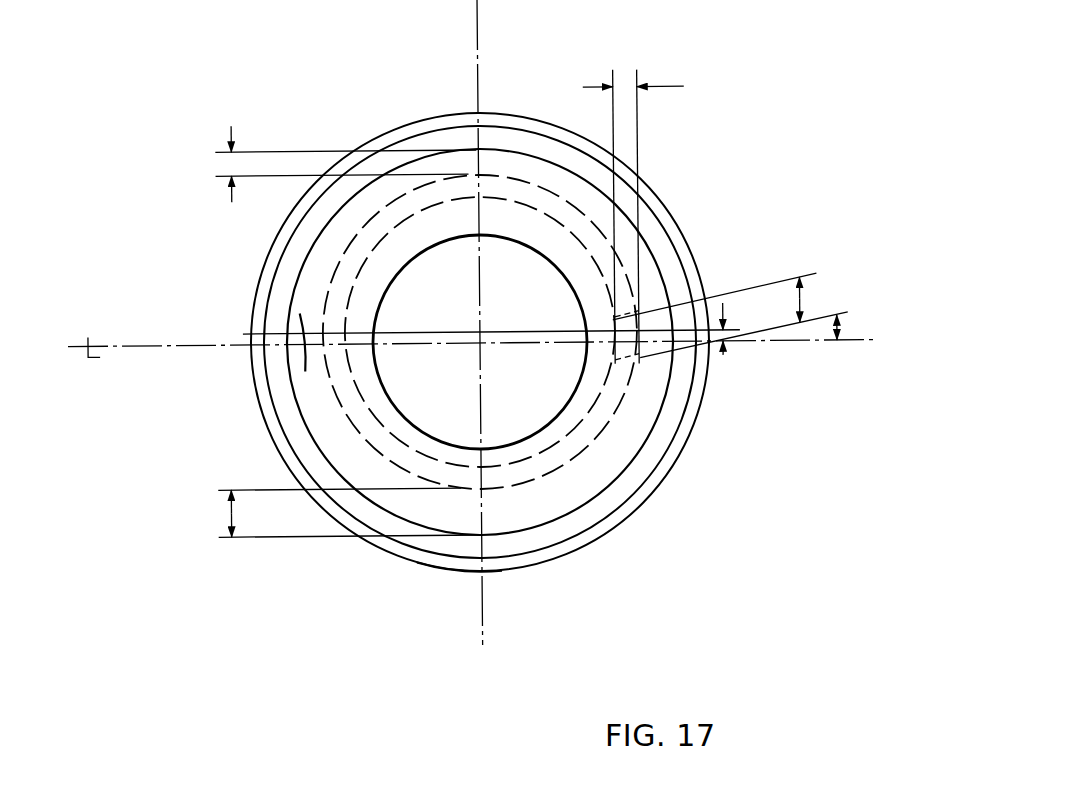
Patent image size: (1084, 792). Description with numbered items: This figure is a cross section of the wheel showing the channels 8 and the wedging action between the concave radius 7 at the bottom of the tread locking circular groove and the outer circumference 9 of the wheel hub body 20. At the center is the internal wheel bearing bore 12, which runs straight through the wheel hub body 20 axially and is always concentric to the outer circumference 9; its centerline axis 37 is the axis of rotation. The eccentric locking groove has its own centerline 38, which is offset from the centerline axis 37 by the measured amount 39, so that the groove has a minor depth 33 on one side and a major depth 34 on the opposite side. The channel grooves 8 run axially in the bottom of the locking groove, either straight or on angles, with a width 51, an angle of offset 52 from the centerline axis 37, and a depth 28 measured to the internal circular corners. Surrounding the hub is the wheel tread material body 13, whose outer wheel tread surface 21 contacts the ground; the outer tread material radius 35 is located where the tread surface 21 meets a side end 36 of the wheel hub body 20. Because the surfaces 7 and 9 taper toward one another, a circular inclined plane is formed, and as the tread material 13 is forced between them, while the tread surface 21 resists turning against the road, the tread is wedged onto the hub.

The concave radius 7 is at (572, 463).
The channel grooves 8 is at (640, 361).
The outer circumference 9 is at (302, 265).
The internal wheel bearing bore 12 is at (375, 391).
The wheel tread material body 13 is at (648, 470).
The wheel hub body 20 is at (305, 370).
The outer wheel tread surface 21 is at (415, 562).
The depth of the channels 28 is at (650, 216).
The minor depth of the eccentric locking circular groove 33 is at (230, 163).
The major depth of the eccentric locking circular groove 34 is at (230, 511).
The outer tread material radius 35 is at (405, 133).
The side end of the wheel hub body 36 is at (463, 165).
The centerline axis 37 is at (182, 343).
The centerline of the eccentric locking groove 38 is at (235, 332).
The amount of measured offset 39 is at (723, 312).
The width of channels 51 is at (803, 303).
The angle of offset of channels 52 is at (848, 316).